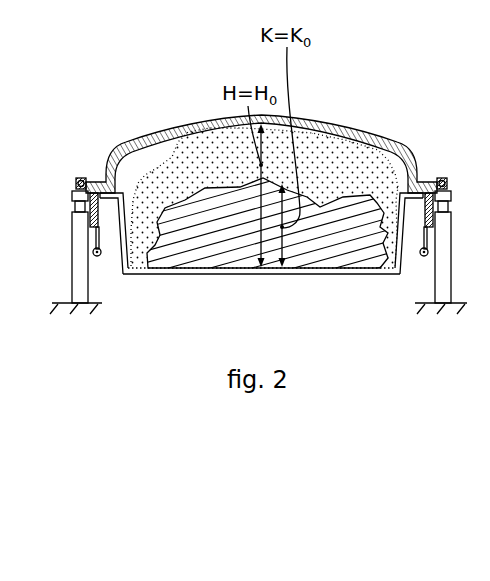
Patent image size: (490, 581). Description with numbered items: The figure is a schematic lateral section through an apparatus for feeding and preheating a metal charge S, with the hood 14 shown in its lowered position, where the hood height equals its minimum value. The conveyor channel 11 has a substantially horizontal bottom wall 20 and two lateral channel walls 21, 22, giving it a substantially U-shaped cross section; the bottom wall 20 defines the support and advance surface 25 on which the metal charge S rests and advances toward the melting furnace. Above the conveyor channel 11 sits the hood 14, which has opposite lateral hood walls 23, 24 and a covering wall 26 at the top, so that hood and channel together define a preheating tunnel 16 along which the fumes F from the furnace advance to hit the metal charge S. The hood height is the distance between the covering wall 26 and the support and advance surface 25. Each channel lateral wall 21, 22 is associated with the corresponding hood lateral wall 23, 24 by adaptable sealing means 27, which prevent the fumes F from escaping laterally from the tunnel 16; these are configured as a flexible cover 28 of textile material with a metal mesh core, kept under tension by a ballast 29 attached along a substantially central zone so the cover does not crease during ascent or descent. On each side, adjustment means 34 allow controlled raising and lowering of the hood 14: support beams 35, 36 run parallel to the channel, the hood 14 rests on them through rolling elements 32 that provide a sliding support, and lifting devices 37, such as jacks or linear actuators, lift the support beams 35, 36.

The conveyor channel 11 is at (261, 272).
The hood 14 is at (261, 112).
The preheating tunnel 16 is at (364, 149).
The bottom wall 20 is at (255, 270).
The lateral channel wall 21 is at (399, 256).
The lateral channel wall 22 is at (125, 256).
The hood lateral wall 23 is at (412, 175).
The hood lateral wall 24 is at (108, 171).
The support and advance surface 25 is at (215, 267).
The covering wall 26 is at (310, 125).
The adaptable sealing means 27 is at (106, 290).
The flexible cover 28 is at (93, 237).
The ballast 29 is at (97, 252).
The rolling element 32 is at (82, 185).
The adjustment means 34 is at (261, 235).
The support beam 35 is at (443, 196).
The support beam 36 is at (80, 197).
The lifting device 37 is at (82, 290).
The fumes F is at (188, 152).
The metal charge S is at (325, 248).